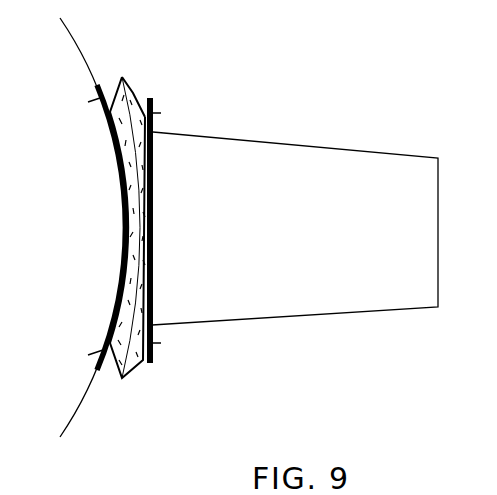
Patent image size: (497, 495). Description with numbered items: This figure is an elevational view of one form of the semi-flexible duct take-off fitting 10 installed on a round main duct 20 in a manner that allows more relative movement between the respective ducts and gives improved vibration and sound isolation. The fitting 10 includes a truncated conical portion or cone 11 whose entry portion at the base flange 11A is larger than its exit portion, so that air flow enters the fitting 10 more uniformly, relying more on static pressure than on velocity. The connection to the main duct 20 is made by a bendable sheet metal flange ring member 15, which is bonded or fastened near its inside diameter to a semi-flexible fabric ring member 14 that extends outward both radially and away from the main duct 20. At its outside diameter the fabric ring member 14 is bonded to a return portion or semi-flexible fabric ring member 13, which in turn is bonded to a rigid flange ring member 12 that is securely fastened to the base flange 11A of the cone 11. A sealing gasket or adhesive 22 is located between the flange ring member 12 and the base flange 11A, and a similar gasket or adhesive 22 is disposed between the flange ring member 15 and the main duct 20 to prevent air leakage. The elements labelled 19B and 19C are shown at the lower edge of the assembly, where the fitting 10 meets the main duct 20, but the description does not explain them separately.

The semi-flexible duct take-off fitting 10 is at (292, 241).
The truncated conical portion or cone 11 is at (338, 148).
The base flange 11A is at (160, 343).
The rigid flange ring member 12 is at (148, 99).
The semi-flexible fabric ring member 13 is at (128, 85).
The semi-flexible fabric ring member 14 is at (110, 116).
The bendable sheet metal flange ring member 15 is at (98, 86).
The lower seal edge 19B is at (103, 365).
The seal lip 19C is at (154, 352).
The round main duct 20 is at (80, 403).
The sealing gasket or adhesive 22 is at (151, 363).